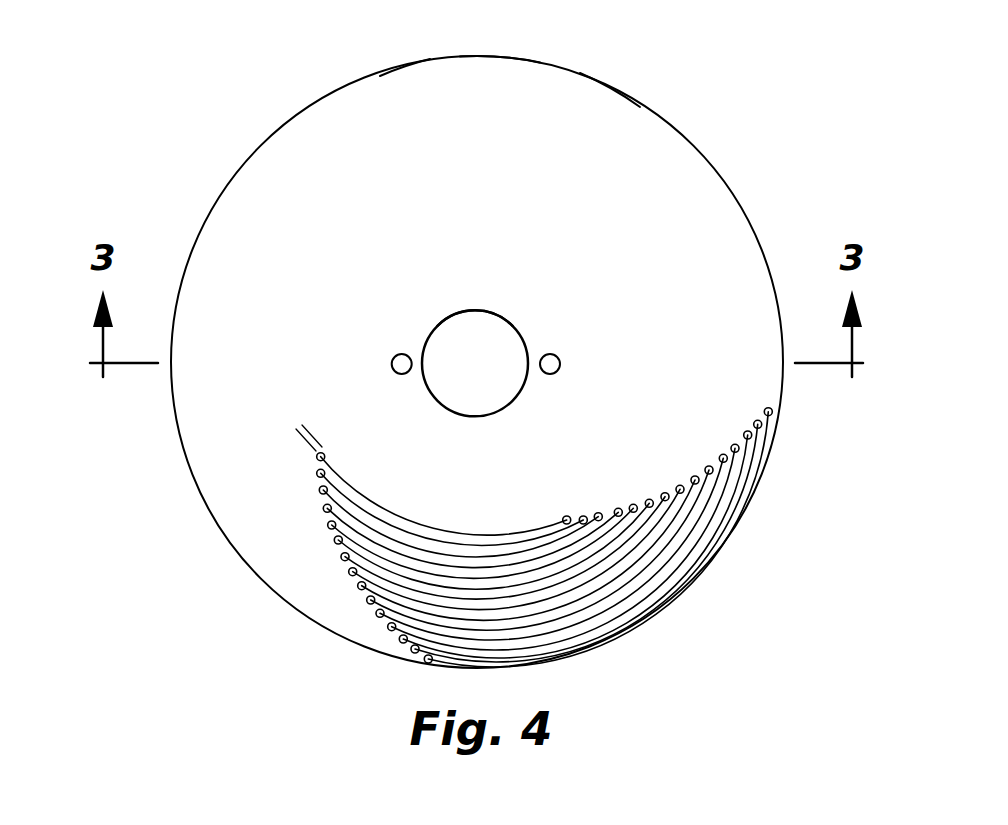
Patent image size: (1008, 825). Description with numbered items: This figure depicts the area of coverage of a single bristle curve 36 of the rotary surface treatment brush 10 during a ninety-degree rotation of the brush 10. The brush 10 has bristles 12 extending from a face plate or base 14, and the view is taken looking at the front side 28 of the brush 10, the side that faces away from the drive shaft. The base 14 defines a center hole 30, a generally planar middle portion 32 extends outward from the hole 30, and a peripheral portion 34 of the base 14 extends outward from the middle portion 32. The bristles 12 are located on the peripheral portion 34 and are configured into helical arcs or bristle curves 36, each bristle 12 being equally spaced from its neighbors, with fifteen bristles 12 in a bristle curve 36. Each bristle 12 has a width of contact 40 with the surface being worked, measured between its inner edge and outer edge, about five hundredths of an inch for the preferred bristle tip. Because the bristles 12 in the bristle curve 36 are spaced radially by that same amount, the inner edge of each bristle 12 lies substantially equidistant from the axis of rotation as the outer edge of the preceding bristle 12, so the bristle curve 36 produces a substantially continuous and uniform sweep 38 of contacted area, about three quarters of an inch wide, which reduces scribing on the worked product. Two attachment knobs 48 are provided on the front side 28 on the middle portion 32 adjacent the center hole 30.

The brush 10 is at (703, 105).
The bristles 12 is at (545, 520).
The base 14 is at (400, 67).
The front side 28 is at (500, 63).
The center hole 30 is at (500, 410).
The middle portion 32 is at (412, 294).
The peripheral portion 34 is at (607, 105).
The bristle curve 36 is at (717, 445).
The sweep 38 is at (470, 546).
The width of contact 40 is at (355, 390).
The attachment knobs 48 is at (393, 360).